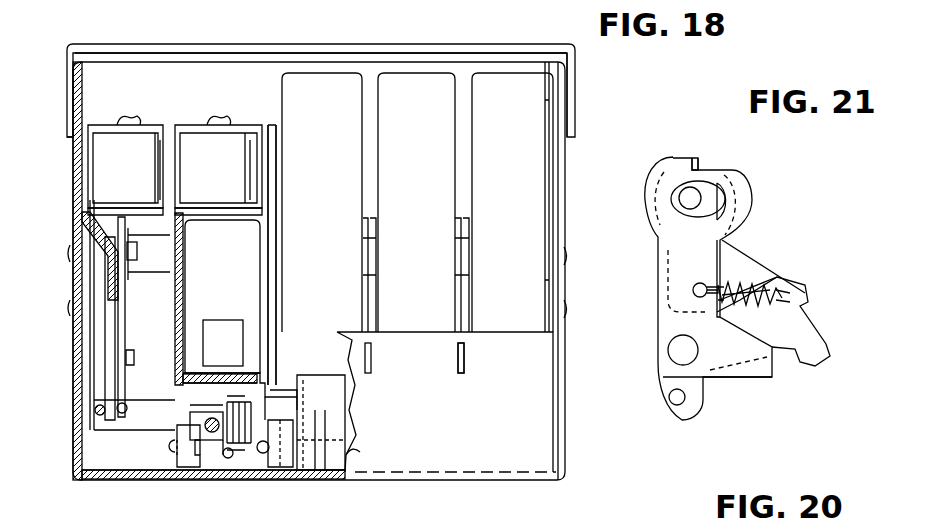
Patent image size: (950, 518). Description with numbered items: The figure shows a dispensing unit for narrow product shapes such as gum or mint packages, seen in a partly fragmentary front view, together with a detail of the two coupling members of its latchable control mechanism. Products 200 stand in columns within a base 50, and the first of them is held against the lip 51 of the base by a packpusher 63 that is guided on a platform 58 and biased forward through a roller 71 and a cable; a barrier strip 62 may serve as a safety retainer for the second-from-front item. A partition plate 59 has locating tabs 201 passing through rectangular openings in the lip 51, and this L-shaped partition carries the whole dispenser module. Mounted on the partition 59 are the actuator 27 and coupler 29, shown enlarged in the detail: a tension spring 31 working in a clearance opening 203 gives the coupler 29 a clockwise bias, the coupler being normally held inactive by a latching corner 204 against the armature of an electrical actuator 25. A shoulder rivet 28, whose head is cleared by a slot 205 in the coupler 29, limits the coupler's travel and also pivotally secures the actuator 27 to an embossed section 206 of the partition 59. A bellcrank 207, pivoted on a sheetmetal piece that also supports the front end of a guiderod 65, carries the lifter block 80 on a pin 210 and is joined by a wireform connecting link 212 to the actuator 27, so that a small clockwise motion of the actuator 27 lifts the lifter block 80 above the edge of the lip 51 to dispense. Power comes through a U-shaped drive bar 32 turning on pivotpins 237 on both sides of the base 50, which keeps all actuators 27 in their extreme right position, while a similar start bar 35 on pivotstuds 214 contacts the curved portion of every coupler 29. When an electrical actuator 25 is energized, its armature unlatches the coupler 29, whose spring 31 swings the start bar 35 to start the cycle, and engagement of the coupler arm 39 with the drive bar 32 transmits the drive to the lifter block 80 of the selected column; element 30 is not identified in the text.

In FIG. 18, the base 50 is at (581, 452).
In FIG. 18, the barrier strip 62 is at (357, 46).
In FIG. 18, the products 200 is at (340, 199).
In FIG. 18, the lip 51 is at (426, 364).
In FIG. 18, the locating tabs 201 is at (465, 377).
In FIG. 18, the pin 210 is at (362, 452).
In FIG. 18, the electrical actuator 25 is at (228, 179).
In FIG. 18, the partition plate 59 is at (284, 255).
In FIG. 18, the packpusher 63 is at (236, 275).
In FIG. 18, the platform 58 is at (223, 343).
In FIG. 18, the start bar 35 is at (165, 264).
In FIG. 18, the shoulder rivet 28 is at (130, 262).
In FIG. 18, the coupler 29 is at (124, 303).
In FIG. 21, the coupler 29 is at (710, 259).
In FIG. 18, the actuator 27 is at (126, 336).
In FIG. 21, the actuator 27 is at (809, 344).
In FIG. 18, the pivot hole 30 is at (150, 380).
In FIG. 21, the pivot hole 30 is at (667, 353).
In FIG. 18, the embossed section 206 is at (82, 279).
In FIG. 18, the drive bar 32 is at (163, 422).
In FIG. 18, the connecting link 212 is at (163, 447).
In FIG. 18, the guiderod 65 is at (220, 437).
In FIG. 18, the roller 71 is at (238, 450).
In FIG. 18, the bellcrank 207 is at (285, 458).
In FIG. 18, the lifter block 80 is at (333, 409).
In FIG. 18, the pivotpins 237 is at (66, 252).
In FIG. 18, the pivotstuds 214 is at (70, 305).
In FIG. 21, the latching corner 204 is at (697, 165).
In FIG. 21, the slot 205 is at (730, 198).
In FIG. 21, the clearance opening 203 is at (723, 276).
In FIG. 21, the tension spring 31 is at (778, 295).
In FIG. 21, the coupler arm 39 is at (762, 380).